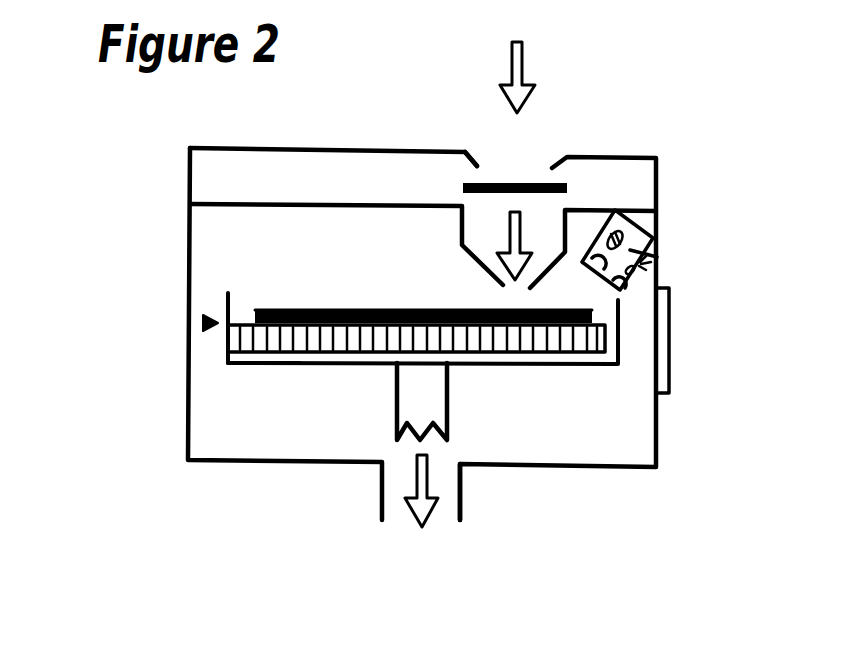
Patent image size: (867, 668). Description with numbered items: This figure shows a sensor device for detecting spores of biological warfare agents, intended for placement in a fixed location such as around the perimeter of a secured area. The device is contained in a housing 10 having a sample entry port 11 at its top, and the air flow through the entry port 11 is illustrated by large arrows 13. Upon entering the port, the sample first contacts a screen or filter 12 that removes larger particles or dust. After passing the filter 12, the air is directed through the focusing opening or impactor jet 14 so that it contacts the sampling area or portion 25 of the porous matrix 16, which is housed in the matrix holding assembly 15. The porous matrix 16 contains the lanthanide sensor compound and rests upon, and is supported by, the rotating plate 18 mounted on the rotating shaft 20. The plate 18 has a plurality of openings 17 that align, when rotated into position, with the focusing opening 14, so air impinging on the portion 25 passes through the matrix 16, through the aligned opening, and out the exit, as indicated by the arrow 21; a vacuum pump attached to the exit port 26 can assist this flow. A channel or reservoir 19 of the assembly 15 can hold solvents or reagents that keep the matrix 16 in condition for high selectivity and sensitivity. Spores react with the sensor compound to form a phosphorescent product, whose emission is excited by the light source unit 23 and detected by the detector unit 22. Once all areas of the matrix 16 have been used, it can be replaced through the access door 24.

The housing 10 is at (310, 149).
The sample entry port 11 is at (477, 165).
The screen or filter 12 is at (542, 183).
The large arrows 13 is at (533, 247).
The focusing opening or impactor jet 14 is at (503, 285).
The matrix holding assembly 15 is at (203, 324).
The porous matrix 16 is at (337, 309).
The openings 17 is at (505, 338).
The rotating plate 18 is at (565, 367).
The channel or reservoir 19 is at (285, 355).
The rotating shaft 20 is at (397, 399).
The arrow 21 is at (432, 510).
The detector unit 22 is at (658, 230).
The light source unit 23 is at (658, 262).
The access door 24 is at (669, 342).
The sampling area or portion 25 is at (513, 310).
The exit port 26 is at (462, 505).